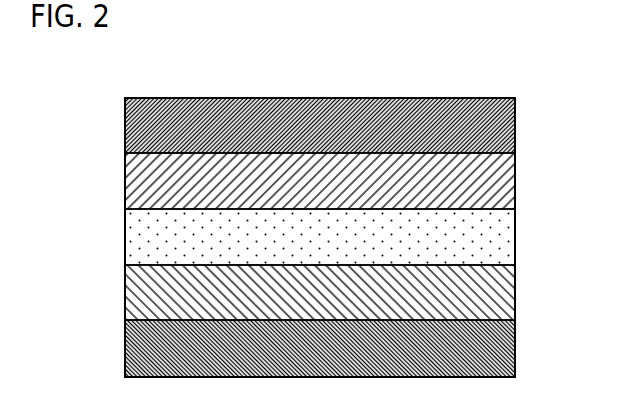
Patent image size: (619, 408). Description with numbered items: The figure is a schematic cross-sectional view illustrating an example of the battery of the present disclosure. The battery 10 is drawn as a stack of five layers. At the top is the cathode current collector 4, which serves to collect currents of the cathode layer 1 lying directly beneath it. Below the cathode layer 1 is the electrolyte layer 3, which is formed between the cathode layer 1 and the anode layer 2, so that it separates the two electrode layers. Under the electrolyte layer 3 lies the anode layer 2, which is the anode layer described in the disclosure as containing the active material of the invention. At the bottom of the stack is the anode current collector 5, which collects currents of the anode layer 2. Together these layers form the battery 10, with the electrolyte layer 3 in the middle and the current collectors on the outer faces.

The battery 10 is at (500, 83).
The cathode current collector 4 is at (505, 122).
The cathode layer 1 is at (505, 177).
The electrolyte layer 3 is at (505, 233).
The anode layer 2 is at (505, 290).
The anode current collector 5 is at (505, 345).